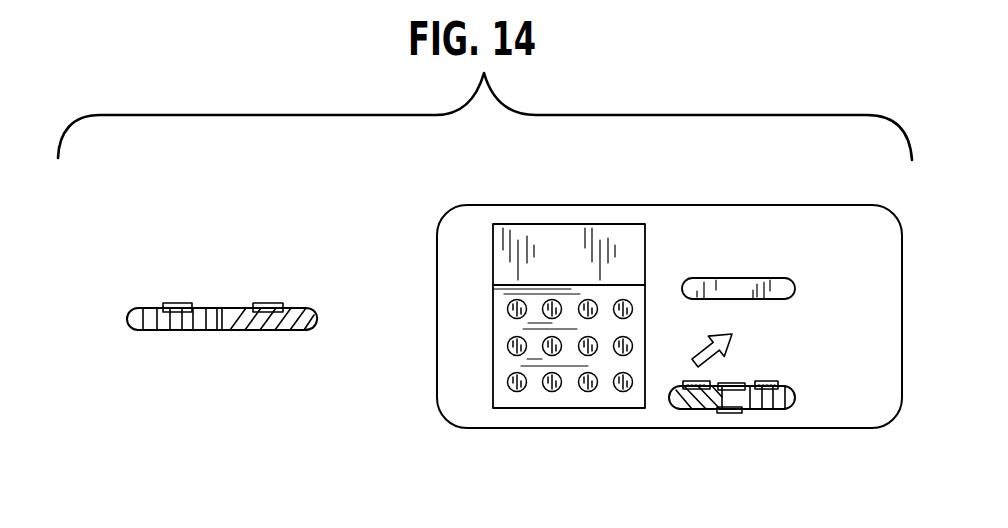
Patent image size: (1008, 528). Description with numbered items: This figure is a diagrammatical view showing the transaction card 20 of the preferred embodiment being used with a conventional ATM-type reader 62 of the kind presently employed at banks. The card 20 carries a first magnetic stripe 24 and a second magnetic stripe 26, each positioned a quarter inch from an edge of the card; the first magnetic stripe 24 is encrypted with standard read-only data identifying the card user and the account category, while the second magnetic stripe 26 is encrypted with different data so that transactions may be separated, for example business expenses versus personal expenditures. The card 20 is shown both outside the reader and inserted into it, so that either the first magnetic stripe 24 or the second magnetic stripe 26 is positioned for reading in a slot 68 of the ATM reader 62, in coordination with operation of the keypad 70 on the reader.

The transaction card 20 is at (310, 310).
The first magnetic stripe 24 is at (178, 303).
The second magnetic stripe 26 is at (267, 303).
The ATM-type reader 62 is at (617, 204).
The slot 68 is at (730, 278).
The keypad 70 is at (500, 317).